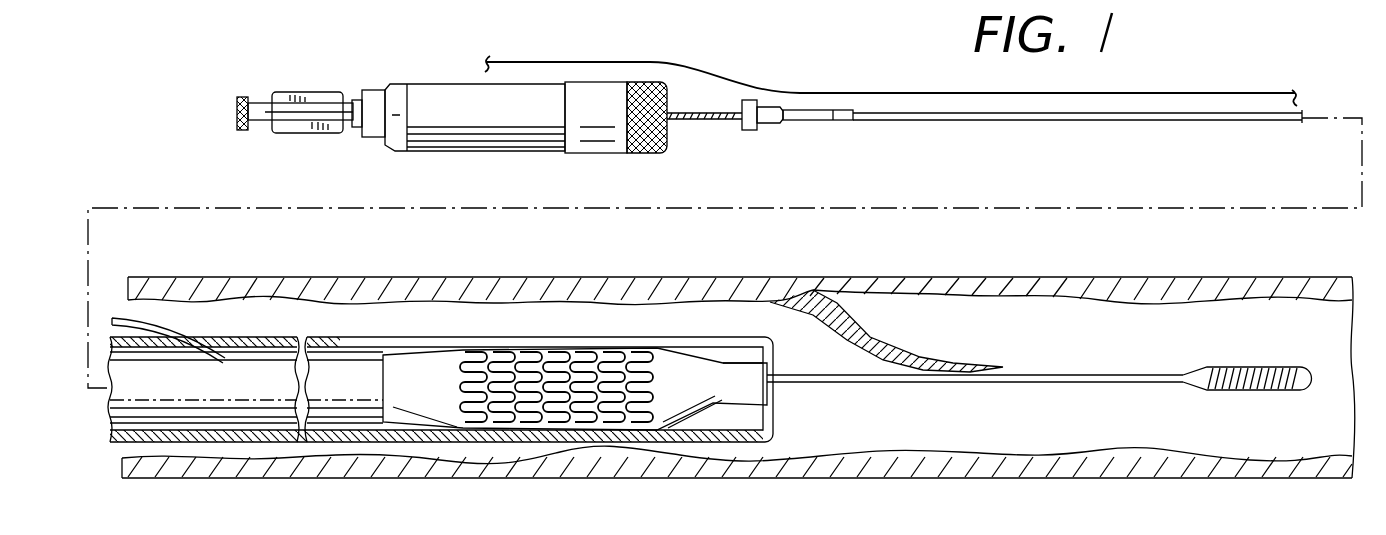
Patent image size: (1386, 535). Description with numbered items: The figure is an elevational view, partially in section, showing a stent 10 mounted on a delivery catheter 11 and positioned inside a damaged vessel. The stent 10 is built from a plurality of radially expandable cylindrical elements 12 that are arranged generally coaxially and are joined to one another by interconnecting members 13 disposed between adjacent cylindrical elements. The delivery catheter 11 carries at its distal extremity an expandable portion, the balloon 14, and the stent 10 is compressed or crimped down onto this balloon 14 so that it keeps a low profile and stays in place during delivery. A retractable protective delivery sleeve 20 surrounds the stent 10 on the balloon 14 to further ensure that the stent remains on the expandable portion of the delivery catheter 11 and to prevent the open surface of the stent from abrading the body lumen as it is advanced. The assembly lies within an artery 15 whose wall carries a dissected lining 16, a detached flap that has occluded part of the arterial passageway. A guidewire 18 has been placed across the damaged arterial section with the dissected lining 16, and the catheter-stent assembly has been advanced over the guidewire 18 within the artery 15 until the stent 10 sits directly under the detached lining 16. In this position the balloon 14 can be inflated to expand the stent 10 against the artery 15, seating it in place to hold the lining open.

The stent 10 is at (457, 390).
The delivery catheter 11 is at (1007, 120).
The radially expandable cylindrical elements 12 is at (587, 350).
The interconnecting members 13 is at (512, 360).
The balloon 14 is at (413, 392).
The artery 15 is at (903, 447).
The dissected lining 16 is at (873, 350).
The guidewire 18 is at (1090, 373).
The retractable protective delivery sleeve 20 is at (455, 438).